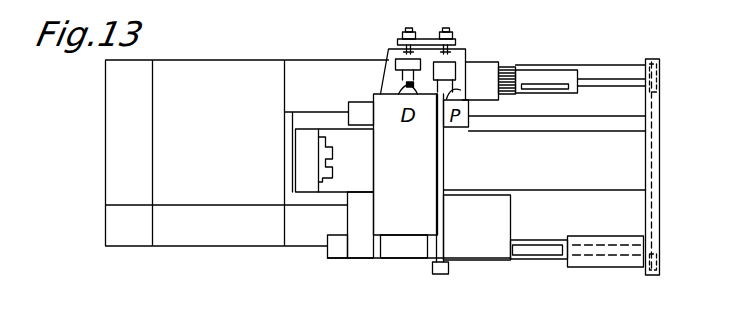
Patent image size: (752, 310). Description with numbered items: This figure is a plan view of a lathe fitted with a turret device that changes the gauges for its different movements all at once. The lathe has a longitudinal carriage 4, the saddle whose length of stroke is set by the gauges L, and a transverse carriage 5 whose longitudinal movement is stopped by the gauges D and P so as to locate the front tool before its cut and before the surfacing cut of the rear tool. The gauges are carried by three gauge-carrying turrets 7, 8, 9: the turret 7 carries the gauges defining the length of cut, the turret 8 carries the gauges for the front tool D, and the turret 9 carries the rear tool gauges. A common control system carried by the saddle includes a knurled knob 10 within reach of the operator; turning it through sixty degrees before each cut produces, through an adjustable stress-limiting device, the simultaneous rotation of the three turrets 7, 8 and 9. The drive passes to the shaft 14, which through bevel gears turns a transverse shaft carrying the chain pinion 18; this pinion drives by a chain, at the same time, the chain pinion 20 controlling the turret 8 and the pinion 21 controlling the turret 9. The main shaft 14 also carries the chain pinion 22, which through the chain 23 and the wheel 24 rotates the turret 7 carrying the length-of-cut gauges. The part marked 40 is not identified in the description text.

The longitudinal carriage 4 is at (502, 209).
The transverse carriage 5 is at (379, 144).
The gauge-carrying turret 7 is at (339, 247).
The gauge-carrying turret 8 is at (395, 62).
The gauge-carrying turret 9 is at (455, 68).
The knurled knob 10 is at (508, 66).
The shaft 14 is at (595, 80).
The chain pinion 18 is at (428, 37).
The chain pinion 20 is at (404, 34).
The pinion 21 is at (452, 38).
The chain pinion 22 is at (652, 62).
The chain 23 is at (657, 124).
The wheel 24 is at (648, 237).
The pin 40 is at (651, 275).